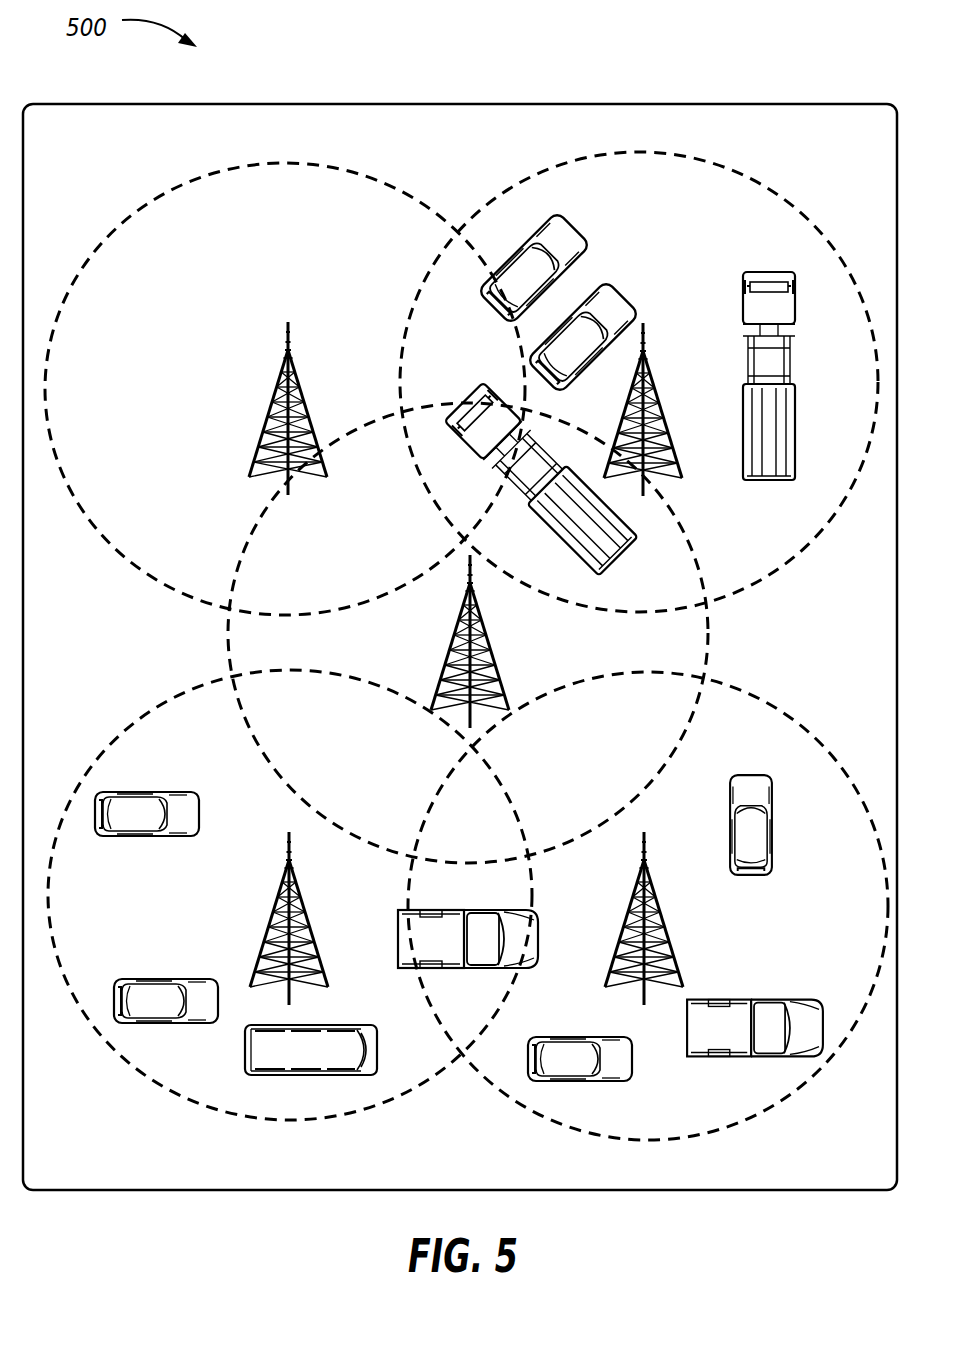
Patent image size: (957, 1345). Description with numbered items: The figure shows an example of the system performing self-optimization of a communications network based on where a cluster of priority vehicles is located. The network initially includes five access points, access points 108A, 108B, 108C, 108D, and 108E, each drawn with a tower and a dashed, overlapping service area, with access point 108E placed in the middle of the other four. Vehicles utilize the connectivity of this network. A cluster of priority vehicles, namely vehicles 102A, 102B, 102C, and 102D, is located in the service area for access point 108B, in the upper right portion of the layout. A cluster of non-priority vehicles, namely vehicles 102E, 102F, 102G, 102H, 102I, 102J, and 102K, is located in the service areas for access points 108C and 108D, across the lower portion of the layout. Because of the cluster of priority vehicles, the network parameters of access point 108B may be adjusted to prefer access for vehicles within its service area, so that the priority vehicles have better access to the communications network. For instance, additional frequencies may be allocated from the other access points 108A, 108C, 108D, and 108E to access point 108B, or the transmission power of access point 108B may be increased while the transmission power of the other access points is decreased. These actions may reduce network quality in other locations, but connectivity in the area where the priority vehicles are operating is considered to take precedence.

The access point 108A is at (234, 270).
The access point 108B is at (715, 269).
The access point 108C is at (182, 935).
The access point 108D is at (790, 950).
The access point 108E is at (593, 656).
The priority vehicle 102A is at (627, 224).
The priority vehicle 102B is at (520, 373).
The priority vehicle 102C is at (740, 337).
The priority vehicle 102D is at (553, 551).
The non-priority vehicle 102E is at (177, 791).
The non-priority vehicle 102F is at (192, 979).
The non-priority vehicle 102G is at (328, 1107).
The non-priority vehicle 102H is at (492, 1001).
The non-priority vehicle 102I is at (603, 1115).
The non-priority vehicle 102J is at (773, 1086).
The non-priority vehicle 102K is at (823, 842).